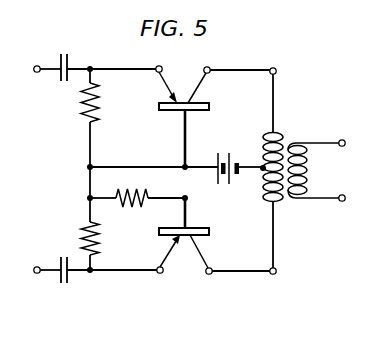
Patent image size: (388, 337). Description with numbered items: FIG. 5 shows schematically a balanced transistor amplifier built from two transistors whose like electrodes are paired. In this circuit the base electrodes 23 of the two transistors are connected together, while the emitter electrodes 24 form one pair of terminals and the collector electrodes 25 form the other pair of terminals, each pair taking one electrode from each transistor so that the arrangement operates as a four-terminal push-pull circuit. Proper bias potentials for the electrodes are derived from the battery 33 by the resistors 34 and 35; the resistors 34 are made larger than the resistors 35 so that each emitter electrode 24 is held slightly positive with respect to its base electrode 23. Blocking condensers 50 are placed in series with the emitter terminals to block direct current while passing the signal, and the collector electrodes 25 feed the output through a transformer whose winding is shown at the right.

The blocking condenser 50 is at (64, 53).
The resistor 35 is at (80, 100).
The resistor 34 is at (135, 190).
The base electrode 23 is at (178, 113).
The emitter electrode 24 is at (164, 80).
The collector electrode 25 is at (200, 86).
The battery 33 is at (227, 150).